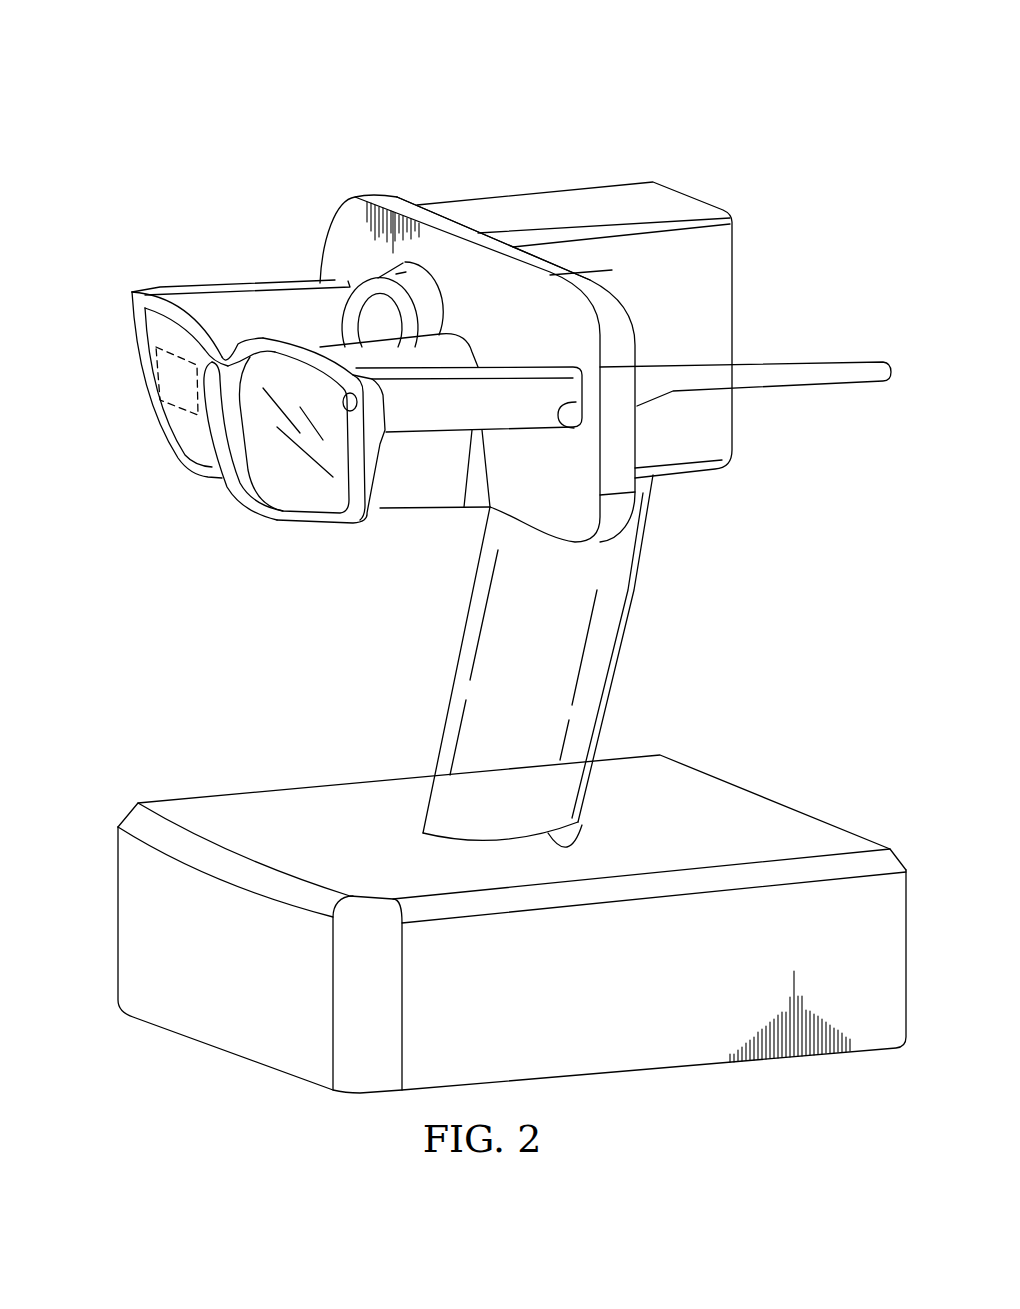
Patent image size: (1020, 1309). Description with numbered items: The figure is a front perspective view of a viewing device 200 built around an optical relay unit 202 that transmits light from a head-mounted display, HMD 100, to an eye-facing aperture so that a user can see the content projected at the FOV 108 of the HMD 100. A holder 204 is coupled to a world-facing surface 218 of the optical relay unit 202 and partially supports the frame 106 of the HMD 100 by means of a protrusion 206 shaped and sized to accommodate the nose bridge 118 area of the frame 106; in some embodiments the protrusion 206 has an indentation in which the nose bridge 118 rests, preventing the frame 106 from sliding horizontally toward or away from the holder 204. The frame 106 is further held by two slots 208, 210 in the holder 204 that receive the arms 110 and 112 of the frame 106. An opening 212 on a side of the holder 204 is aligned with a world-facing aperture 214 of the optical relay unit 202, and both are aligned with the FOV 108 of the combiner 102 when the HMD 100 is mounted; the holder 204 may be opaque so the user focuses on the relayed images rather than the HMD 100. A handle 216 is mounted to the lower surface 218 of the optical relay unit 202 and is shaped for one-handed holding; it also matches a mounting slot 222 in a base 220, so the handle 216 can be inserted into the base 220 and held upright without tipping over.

The HMD 100 is at (93, 253).
The combiner 102 is at (157, 331).
The frame 106 is at (147, 284).
The FOV 108 is at (182, 412).
The arm 110 is at (212, 283).
The arm 112 is at (856, 360).
The nose bridge 118 is at (224, 350).
The viewing device 200 is at (670, 80).
The optical relay unit 202 is at (665, 197).
The holder 204 is at (370, 193).
The protrusion 206 is at (255, 519).
The slot 208 is at (345, 277).
The slot 210 is at (557, 412).
The opening 212 is at (425, 314).
The world-facing aperture 214 is at (362, 330).
The handle 216 is at (619, 650).
The world-facing surface 218 is at (482, 220).
The base 220 is at (680, 1066).
The mounting slot 222 is at (582, 827).